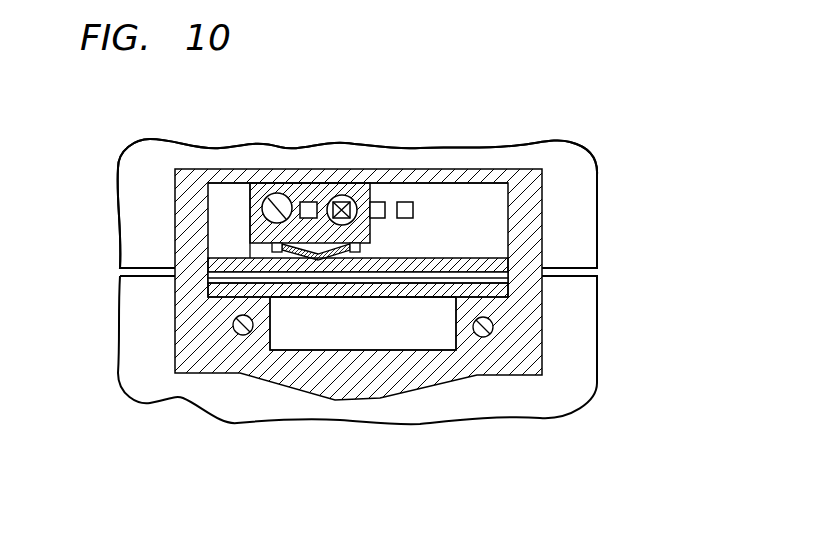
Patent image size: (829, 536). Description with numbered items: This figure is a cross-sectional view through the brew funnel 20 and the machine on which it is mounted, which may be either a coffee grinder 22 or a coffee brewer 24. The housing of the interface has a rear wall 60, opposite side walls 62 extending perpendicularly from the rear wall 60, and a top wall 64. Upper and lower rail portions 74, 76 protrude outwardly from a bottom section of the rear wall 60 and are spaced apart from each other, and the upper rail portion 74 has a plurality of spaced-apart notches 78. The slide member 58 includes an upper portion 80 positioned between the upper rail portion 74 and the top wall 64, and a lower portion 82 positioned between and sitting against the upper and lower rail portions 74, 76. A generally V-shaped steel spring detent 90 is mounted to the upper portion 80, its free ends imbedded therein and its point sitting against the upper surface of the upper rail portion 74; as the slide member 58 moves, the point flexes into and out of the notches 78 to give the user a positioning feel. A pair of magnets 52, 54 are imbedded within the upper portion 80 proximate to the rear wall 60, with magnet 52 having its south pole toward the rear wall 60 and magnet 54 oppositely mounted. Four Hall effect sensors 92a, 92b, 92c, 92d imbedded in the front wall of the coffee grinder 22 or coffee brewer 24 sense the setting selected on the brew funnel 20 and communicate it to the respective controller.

The brew funnel 20 is at (540, 397).
The coffee grinder 22 is at (573, 178).
The coffee brewer 24 is at (357, 203).
The magnet 52 is at (279, 194).
The magnet 54 is at (345, 195).
The slide member 58 is at (368, 190).
The rear wall 60 is at (310, 330).
The side walls 62 is at (188, 212).
The top wall 64 is at (228, 172).
The upper rail portion 74 is at (497, 266).
The lower rail portion 76 is at (508, 290).
The notches 78 is at (447, 264).
The upper portion 80 is at (255, 232).
The lower portion 82 is at (373, 300).
The spring detent 90 is at (322, 258).
The sensor 92a is at (308, 201).
The sensor 92b is at (352, 220).
The sensor 92c is at (379, 201).
The sensor 92d is at (414, 210).